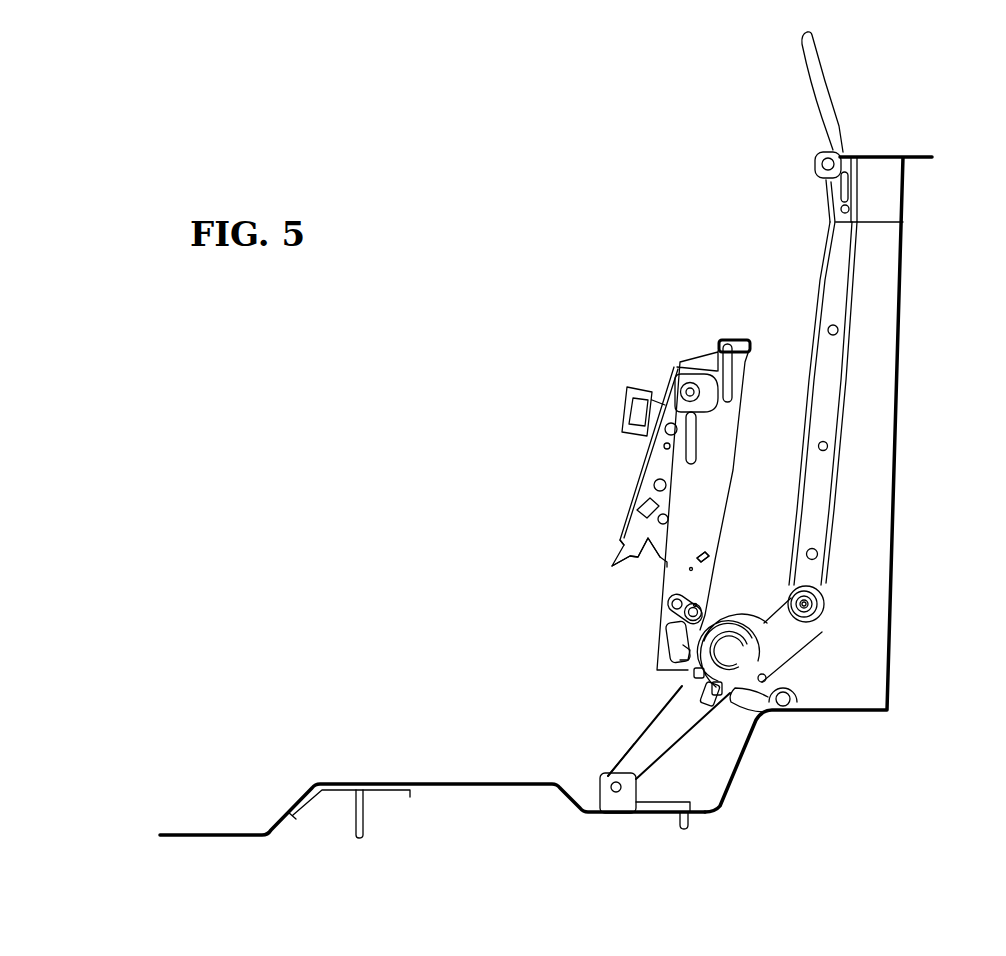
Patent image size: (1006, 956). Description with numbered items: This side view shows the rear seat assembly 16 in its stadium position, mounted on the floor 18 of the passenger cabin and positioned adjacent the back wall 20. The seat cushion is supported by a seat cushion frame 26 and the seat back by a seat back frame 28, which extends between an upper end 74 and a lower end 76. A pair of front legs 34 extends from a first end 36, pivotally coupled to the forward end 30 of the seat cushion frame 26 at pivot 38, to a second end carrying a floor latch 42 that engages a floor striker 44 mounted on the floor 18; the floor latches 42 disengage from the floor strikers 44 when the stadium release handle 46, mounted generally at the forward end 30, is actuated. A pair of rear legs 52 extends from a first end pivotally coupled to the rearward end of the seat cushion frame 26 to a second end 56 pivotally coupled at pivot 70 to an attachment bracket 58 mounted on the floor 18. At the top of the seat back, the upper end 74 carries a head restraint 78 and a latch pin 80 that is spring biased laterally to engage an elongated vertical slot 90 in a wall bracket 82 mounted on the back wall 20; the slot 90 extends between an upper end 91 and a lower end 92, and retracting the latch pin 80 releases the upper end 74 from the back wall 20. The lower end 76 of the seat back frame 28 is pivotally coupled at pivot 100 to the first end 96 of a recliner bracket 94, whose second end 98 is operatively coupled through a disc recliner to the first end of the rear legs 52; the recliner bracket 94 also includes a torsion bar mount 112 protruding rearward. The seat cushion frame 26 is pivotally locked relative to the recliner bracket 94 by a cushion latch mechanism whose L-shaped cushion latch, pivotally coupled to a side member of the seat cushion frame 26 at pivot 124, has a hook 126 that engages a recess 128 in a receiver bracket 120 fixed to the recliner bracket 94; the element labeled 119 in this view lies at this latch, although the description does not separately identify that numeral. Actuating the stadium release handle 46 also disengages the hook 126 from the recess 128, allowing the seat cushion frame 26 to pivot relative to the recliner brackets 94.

The rear seat assembly 16 is at (462, 334).
The floor 18 is at (227, 833).
The back wall 20 is at (889, 403).
The seat cushion frame 26 is at (713, 472).
The seat back frame 28 is at (833, 370).
The forward end 30 is at (738, 340).
The front legs 34 is at (660, 453).
The first end 36 is at (673, 367).
The pivot 38 is at (697, 367).
The floor latch 42 is at (647, 547).
The floor striker 44 is at (367, 792).
The stadium release handle 46 is at (620, 532).
The rear legs 52 is at (663, 743).
The second end 56 is at (623, 762).
The attachment bracket 58 is at (622, 813).
The pivot 70 is at (605, 788).
The upper end 74 is at (838, 232).
The lower end 76 is at (808, 634).
The head restraint 78 is at (818, 52).
The latch pin 80 is at (840, 208).
The wall bracket 82 is at (890, 192).
The elongated vertical slot 90 is at (826, 182).
The upper end 91 is at (838, 158).
The lower end 92 is at (858, 250).
The recliner brackets 94 is at (780, 640).
The first end 96 is at (821, 592).
The second end 98 is at (760, 723).
The pivot 100 is at (812, 612).
The torsion bar mount 112 is at (797, 703).
The link 119 is at (665, 623).
The receiver bracket 120 is at (713, 695).
The pivot 124 is at (712, 583).
The hook 126 is at (667, 657).
The recess 128 is at (685, 692).